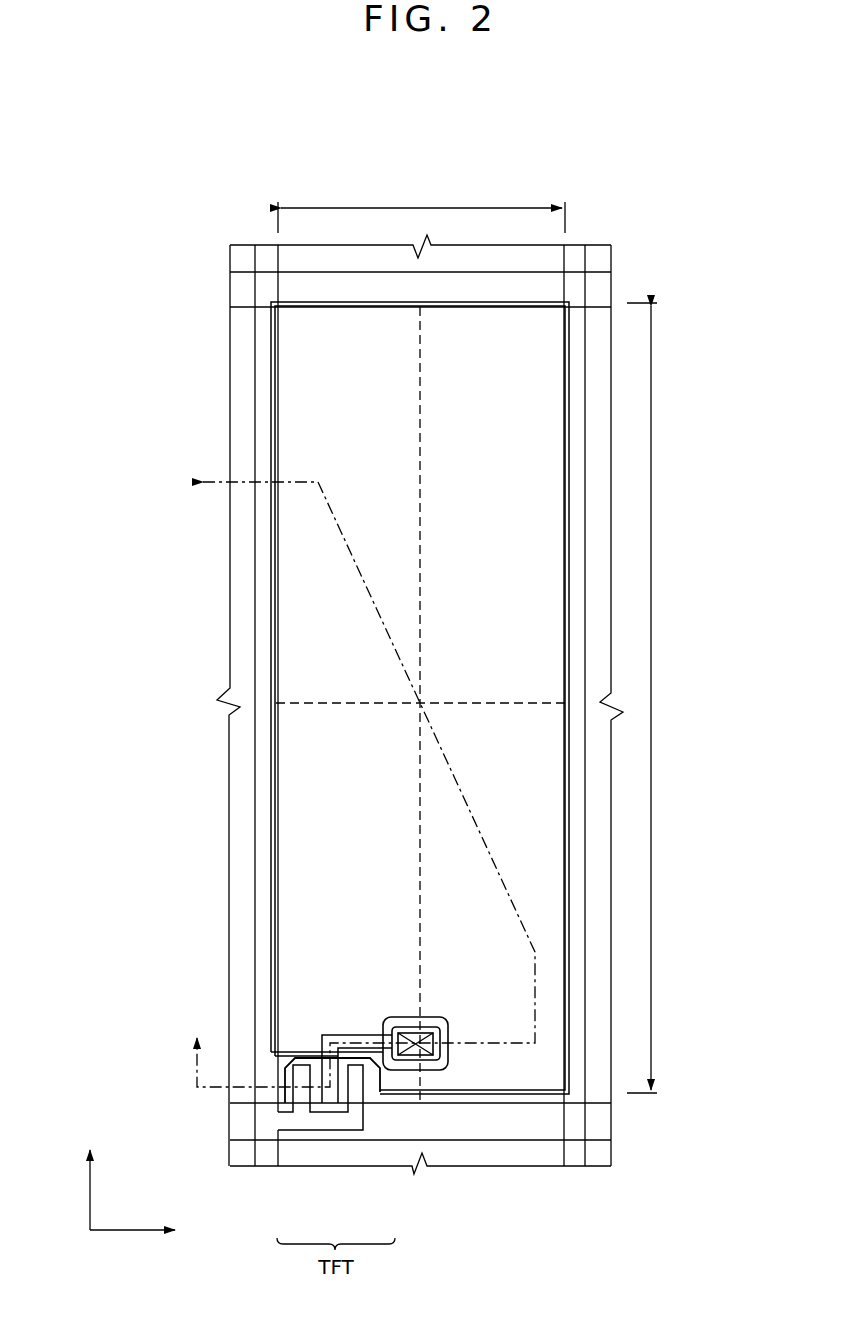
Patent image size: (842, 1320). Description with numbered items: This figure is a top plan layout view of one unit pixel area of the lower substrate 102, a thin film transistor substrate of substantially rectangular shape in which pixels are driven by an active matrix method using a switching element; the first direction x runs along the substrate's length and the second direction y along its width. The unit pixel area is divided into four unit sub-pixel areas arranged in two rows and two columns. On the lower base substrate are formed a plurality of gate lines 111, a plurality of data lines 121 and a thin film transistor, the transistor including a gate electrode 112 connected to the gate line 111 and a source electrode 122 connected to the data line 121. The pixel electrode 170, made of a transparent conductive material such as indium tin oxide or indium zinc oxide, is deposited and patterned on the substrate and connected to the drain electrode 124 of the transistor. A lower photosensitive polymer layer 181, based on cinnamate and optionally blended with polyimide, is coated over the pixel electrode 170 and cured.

The lower substrate 102 is at (310, 168).
The gate line 111 is at (600, 1124).
The gate electrode 112 is at (392, 1103).
The data line 121 is at (255, 861).
The source electrode 122 is at (348, 1104).
The drain electrode 124 is at (320, 1098).
The pixel electrode 170 is at (272, 776).
The lower photosensitive polymer layer 181 is at (304, 628).